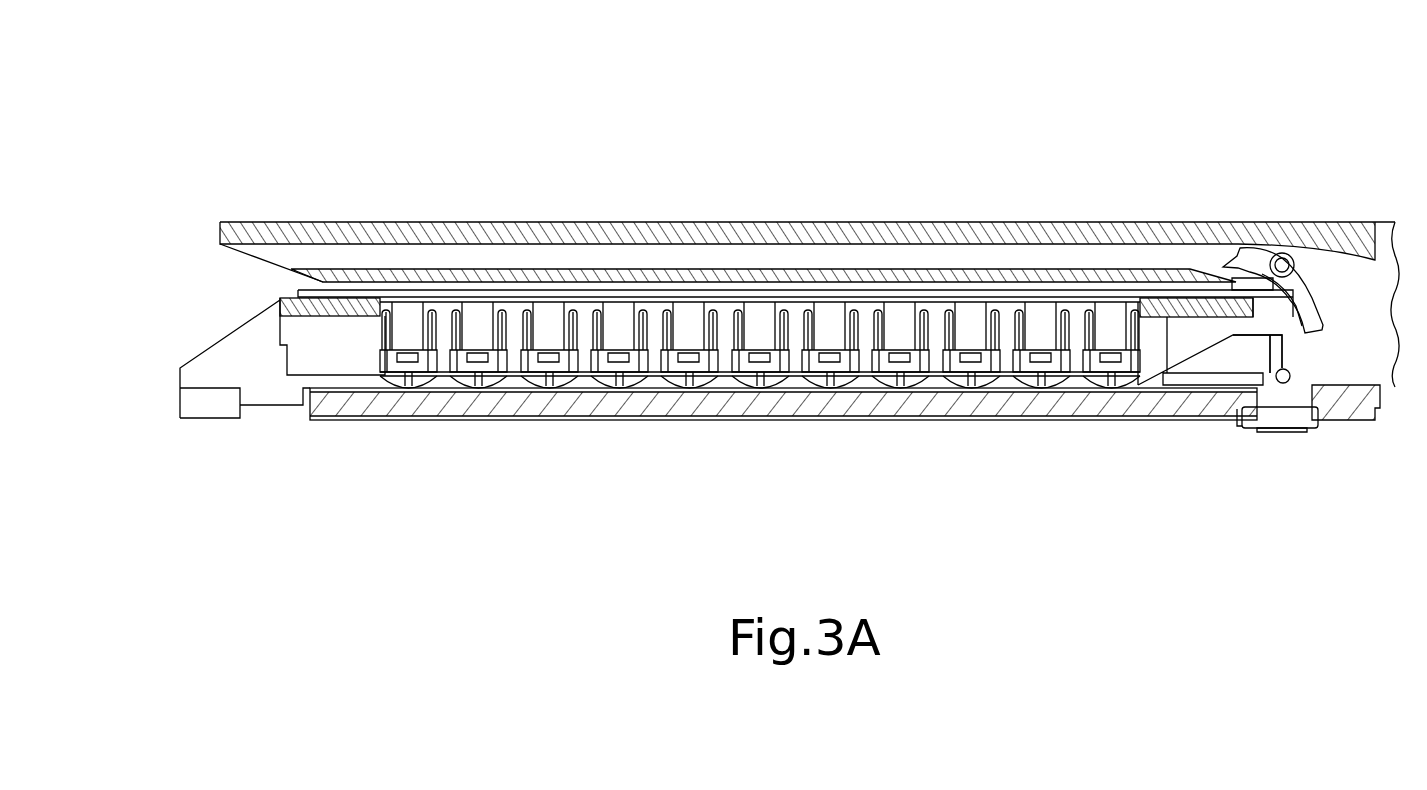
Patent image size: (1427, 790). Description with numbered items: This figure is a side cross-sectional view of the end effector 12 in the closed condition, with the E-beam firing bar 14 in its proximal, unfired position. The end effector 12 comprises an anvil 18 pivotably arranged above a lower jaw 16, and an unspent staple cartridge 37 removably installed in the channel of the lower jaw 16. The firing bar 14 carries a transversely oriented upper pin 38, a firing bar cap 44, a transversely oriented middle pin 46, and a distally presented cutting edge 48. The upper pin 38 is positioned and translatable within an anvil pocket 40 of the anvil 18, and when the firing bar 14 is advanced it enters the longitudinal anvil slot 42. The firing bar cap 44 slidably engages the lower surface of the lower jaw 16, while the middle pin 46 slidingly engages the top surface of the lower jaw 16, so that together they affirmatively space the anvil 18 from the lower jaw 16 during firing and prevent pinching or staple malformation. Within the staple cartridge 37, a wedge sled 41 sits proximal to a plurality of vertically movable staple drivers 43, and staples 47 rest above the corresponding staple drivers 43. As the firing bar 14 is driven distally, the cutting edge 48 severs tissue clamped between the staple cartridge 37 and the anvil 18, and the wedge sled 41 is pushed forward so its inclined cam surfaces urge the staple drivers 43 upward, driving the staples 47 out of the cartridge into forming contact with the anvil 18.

The end effector 12 is at (383, 132).
The firing bar 14 is at (1371, 297).
The lower jaw 16 is at (662, 422).
The anvil 18 is at (863, 222).
The staple cartridge 37 is at (273, 392).
The upper pin 38 is at (1281, 253).
The anvil pocket 40 is at (1343, 250).
The wedge sled 41 is at (1225, 355).
The longitudinal anvil slot 42 is at (547, 223).
The staple drivers 43 is at (1122, 378).
The firing bar cap 44 is at (1288, 420).
The middle pin 46 is at (1288, 371).
The staples 47 is at (1065, 322).
The cutting edge 48 is at (1305, 312).